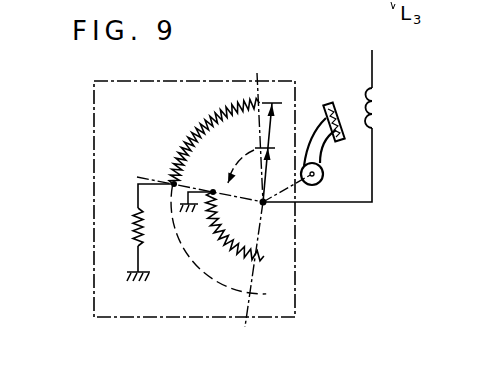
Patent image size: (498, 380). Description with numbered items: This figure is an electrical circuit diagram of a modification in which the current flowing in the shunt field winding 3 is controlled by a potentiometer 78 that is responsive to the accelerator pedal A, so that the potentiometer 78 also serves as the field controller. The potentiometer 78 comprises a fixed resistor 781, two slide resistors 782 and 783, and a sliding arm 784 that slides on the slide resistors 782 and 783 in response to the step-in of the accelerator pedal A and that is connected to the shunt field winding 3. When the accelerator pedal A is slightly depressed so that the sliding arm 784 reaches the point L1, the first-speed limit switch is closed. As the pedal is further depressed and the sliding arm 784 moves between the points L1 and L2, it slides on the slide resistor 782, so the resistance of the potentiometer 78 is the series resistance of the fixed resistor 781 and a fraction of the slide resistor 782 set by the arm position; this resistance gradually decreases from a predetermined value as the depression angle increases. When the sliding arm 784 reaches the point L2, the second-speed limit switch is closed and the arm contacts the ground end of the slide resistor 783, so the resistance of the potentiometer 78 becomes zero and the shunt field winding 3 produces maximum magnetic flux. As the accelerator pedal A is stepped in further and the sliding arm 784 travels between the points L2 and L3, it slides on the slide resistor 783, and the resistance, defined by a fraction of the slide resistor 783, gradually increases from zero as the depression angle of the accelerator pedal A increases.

The potentiometer 78 is at (94, 126).
The fixed resistor 781 is at (144, 216).
The slide resistor 782 is at (204, 126).
The slide resistor 783 is at (233, 253).
The sliding arm 784 is at (272, 124).
The shunt field winding 3 is at (378, 101).
The accelerator pedal A is at (345, 128).
The point L1 is at (255, 73).
The point L2 is at (150, 178).
The point L3 is at (258, 276).